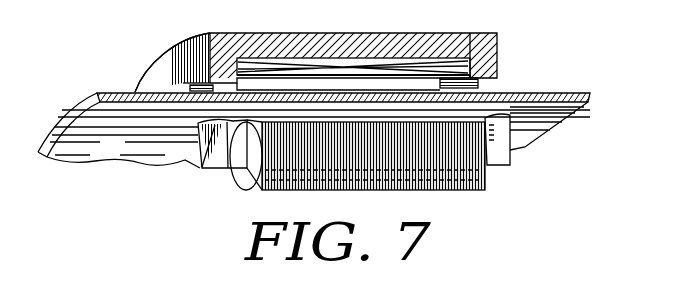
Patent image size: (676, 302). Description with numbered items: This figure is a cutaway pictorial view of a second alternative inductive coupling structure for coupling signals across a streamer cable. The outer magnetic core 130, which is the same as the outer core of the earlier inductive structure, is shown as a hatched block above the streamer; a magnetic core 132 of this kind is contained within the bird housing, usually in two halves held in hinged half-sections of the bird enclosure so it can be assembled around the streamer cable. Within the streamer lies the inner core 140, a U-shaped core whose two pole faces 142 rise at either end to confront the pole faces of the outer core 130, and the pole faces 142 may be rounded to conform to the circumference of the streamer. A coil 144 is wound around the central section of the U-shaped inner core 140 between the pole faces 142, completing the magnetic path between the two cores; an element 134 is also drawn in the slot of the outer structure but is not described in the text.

The outer magnetic core 130 is at (284, 33).
The magnetic core 132 is at (190, 52).
The spring contact 134 is at (432, 66).
The inner core 140 is at (500, 165).
The pole faces 142 is at (199, 166).
The coil 144 is at (236, 186).